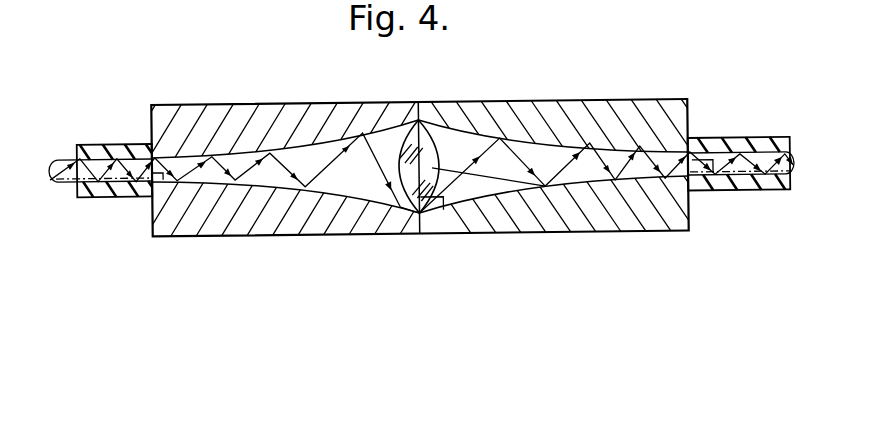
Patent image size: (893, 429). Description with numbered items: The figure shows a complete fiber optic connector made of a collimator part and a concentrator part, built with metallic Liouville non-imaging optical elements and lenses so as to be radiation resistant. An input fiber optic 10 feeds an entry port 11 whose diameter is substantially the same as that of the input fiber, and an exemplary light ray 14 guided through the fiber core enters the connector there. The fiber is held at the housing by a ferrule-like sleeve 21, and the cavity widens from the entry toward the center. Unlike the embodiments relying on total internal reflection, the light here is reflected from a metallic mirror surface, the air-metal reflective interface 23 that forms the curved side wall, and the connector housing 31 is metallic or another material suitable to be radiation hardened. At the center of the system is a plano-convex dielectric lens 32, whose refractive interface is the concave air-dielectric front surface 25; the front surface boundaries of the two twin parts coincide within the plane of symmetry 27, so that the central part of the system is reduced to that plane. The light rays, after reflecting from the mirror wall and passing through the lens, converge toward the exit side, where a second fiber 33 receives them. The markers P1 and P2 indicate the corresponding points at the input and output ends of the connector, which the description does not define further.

The input fiber optic 10 is at (66, 176).
The entry port 11 is at (146, 167).
The exemplary light ray 14 is at (90, 164).
The ferrule 21 is at (115, 193).
The metal-air reflective interface 23 is at (270, 148).
The concave front surface 25 is at (407, 143).
The plane of symmetry 27 is at (443, 210).
The connector housing 31 is at (333, 211).
The plano-convex dielectric lens 32 is at (433, 168).
The second optical fiber 33 is at (688, 154).
The entrance point P1 is at (162, 177).
The exit point P2 is at (713, 176).